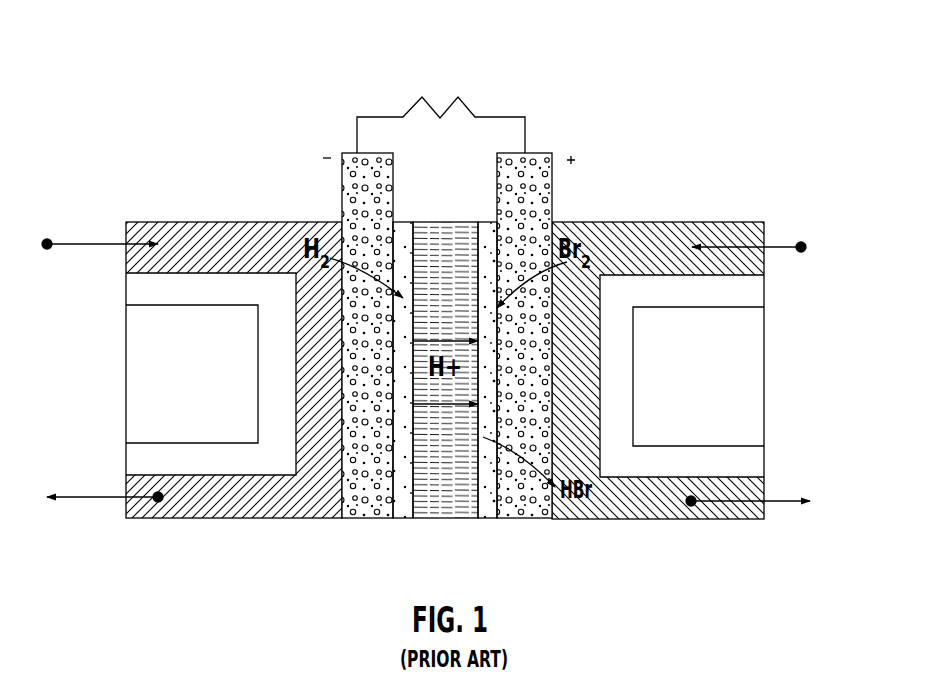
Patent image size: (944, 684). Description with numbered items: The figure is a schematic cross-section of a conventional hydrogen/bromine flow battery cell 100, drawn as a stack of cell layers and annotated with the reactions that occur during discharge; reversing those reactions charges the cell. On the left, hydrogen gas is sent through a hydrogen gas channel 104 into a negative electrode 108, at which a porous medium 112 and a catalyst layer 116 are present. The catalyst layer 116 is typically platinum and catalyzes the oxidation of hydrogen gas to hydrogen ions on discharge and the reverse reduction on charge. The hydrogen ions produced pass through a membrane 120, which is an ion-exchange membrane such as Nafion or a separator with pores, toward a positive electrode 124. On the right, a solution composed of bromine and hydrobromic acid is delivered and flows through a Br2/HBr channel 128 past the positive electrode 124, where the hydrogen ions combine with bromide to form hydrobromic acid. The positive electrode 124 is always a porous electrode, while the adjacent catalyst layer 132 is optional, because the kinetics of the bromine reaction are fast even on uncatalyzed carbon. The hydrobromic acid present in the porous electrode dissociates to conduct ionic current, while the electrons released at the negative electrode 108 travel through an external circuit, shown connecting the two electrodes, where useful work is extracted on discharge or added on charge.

The H2/Br2 flow battery cell 100 is at (773, 118).
The hydrogen gas channel 104 is at (258, 242).
The negative electrode 108 is at (340, 112).
The porous medium 112 is at (342, 188).
The catalyst layer 116 is at (405, 222).
The membrane 120 is at (432, 510).
The positive electrode 124 is at (545, 137).
The Br2/HBr channel 128 is at (633, 253).
The catalyst layer 132 is at (487, 518).